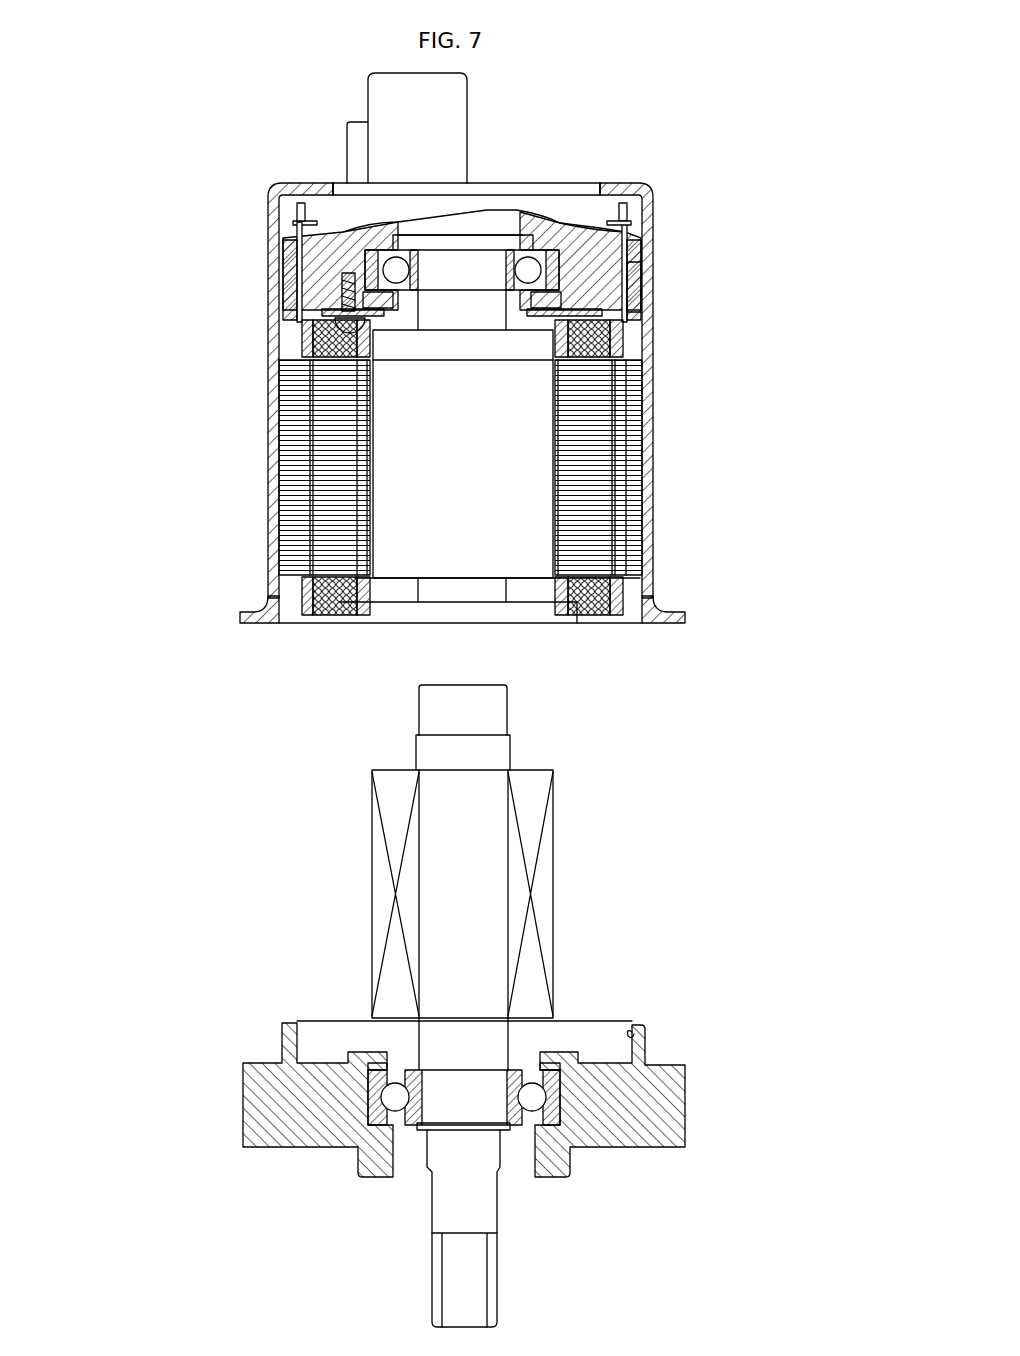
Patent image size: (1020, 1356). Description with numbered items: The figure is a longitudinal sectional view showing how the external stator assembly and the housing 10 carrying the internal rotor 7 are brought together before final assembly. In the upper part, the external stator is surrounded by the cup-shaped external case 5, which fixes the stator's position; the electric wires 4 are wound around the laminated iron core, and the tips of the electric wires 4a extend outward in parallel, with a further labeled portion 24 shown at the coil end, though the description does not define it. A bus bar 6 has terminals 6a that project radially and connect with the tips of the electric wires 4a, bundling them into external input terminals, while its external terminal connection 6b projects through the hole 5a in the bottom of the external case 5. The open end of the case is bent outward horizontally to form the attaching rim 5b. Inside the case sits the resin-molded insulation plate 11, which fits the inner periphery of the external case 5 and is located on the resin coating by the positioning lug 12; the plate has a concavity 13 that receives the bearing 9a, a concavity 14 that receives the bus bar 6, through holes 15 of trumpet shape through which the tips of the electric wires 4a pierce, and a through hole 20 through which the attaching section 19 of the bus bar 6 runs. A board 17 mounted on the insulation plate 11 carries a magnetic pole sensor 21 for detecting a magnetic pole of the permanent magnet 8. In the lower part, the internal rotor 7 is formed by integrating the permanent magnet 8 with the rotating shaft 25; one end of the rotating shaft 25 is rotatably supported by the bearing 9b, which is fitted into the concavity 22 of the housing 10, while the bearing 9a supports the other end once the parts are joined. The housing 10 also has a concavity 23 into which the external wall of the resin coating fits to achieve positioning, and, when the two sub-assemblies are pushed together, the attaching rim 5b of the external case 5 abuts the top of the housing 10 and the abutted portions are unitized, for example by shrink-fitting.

The electric wires 4 is at (589, 612).
The tips of the electric wires 4a is at (302, 205).
The external case 5 is at (653, 449).
The hole 5a is at (335, 183).
The attaching rim 5b is at (666, 612).
The bus bar 6 is at (508, 196).
The terminals 6a is at (296, 228).
The external terminal connection 6b is at (462, 98).
The internal rotor 7 is at (505, 1006).
The permanent magnet 8 is at (553, 880).
The bearing 9a is at (540, 262).
The bearing 9b is at (557, 1112).
The housing 10 is at (686, 1106).
The insulation plate 11 is at (637, 282).
The positioning lug 12 is at (330, 318).
The concavity 13 is at (545, 283).
The concavity 14 is at (598, 238).
The through holes 15 is at (300, 277).
The board 17 is at (607, 342).
The attaching section 19 is at (347, 263).
The through hole 20 is at (305, 335).
The magnetic pole sensor 21 is at (345, 332).
The concavity 22 is at (370, 1118).
The concavity 23 is at (632, 1030).
The coil 24 is at (327, 336).
The rotating shaft 25 is at (478, 952).